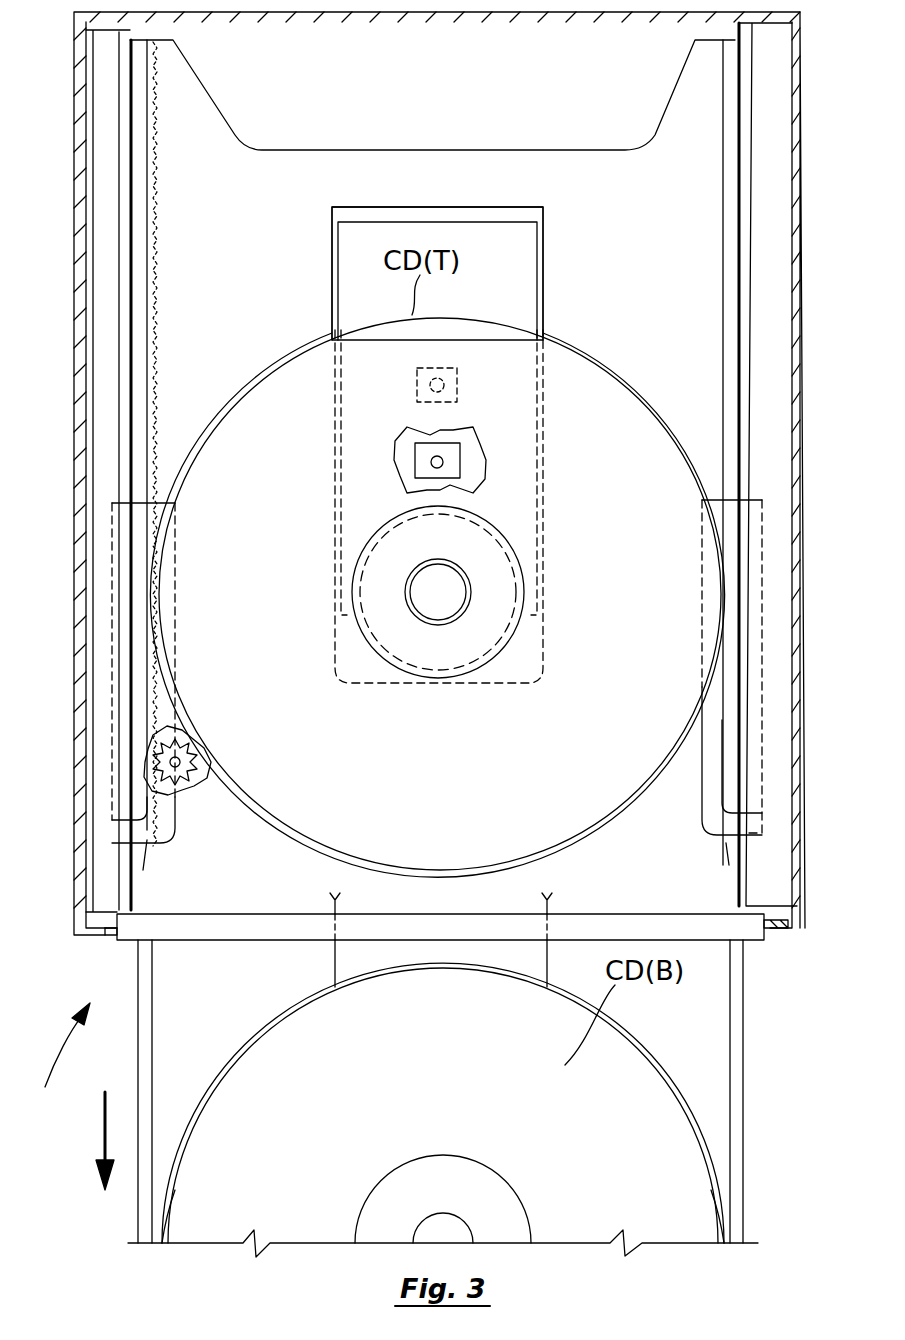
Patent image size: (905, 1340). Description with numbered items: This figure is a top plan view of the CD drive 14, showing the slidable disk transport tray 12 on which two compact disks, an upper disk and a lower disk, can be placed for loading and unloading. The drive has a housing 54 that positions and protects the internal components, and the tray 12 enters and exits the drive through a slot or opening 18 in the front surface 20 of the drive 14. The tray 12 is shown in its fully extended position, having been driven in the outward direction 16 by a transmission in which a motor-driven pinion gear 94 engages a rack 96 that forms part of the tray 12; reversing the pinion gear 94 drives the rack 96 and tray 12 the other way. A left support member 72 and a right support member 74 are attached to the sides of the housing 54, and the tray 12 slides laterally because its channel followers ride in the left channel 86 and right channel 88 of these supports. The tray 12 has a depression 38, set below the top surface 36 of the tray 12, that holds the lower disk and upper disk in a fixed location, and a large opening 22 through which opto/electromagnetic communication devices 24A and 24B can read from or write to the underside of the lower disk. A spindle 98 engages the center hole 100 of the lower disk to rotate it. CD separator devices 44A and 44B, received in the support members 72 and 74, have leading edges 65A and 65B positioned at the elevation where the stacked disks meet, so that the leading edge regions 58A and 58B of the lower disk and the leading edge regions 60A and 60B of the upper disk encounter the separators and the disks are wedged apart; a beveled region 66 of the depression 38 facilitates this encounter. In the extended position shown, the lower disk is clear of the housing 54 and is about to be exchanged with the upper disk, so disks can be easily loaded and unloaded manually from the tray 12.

The CD tray 12 is at (352, 175).
The CD drive 14 is at (60, 1062).
The direction 16 is at (105, 1147).
The slot or opening 18 is at (445, 942).
The front surface 20 is at (102, 945).
The opening 22 is at (335, 633).
The opto/electromagnetic communication device 24A is at (440, 445).
The opto/electromagnetic communication device 24B is at (445, 378).
The top surface of the tray 36 is at (145, 275).
The depression 38 is at (292, 350).
The CD separator device 44A is at (168, 822).
The CD separator device 44B is at (712, 812).
The housing 54 is at (72, 200).
The leading edge region of CD(B) 58A is at (165, 1222).
The leading edge region of CD(B) 58B is at (718, 1222).
The leading edge region of CD(T) 60A is at (167, 533).
The leading edge region of CD(T) 60B is at (703, 523).
The leading edge of separator device 65A is at (144, 848).
The leading edge of separator device 65B is at (727, 848).
The beveled region 66 is at (545, 896).
The left support member 72 is at (160, 337).
The right support member 74 is at (745, 295).
The left channel 86 is at (92, 425).
The right channel 88 is at (735, 338).
The pinion gear 94 is at (195, 750).
The rack 96 is at (152, 390).
The spindle 98 is at (455, 597).
The center hole 100 is at (415, 570).